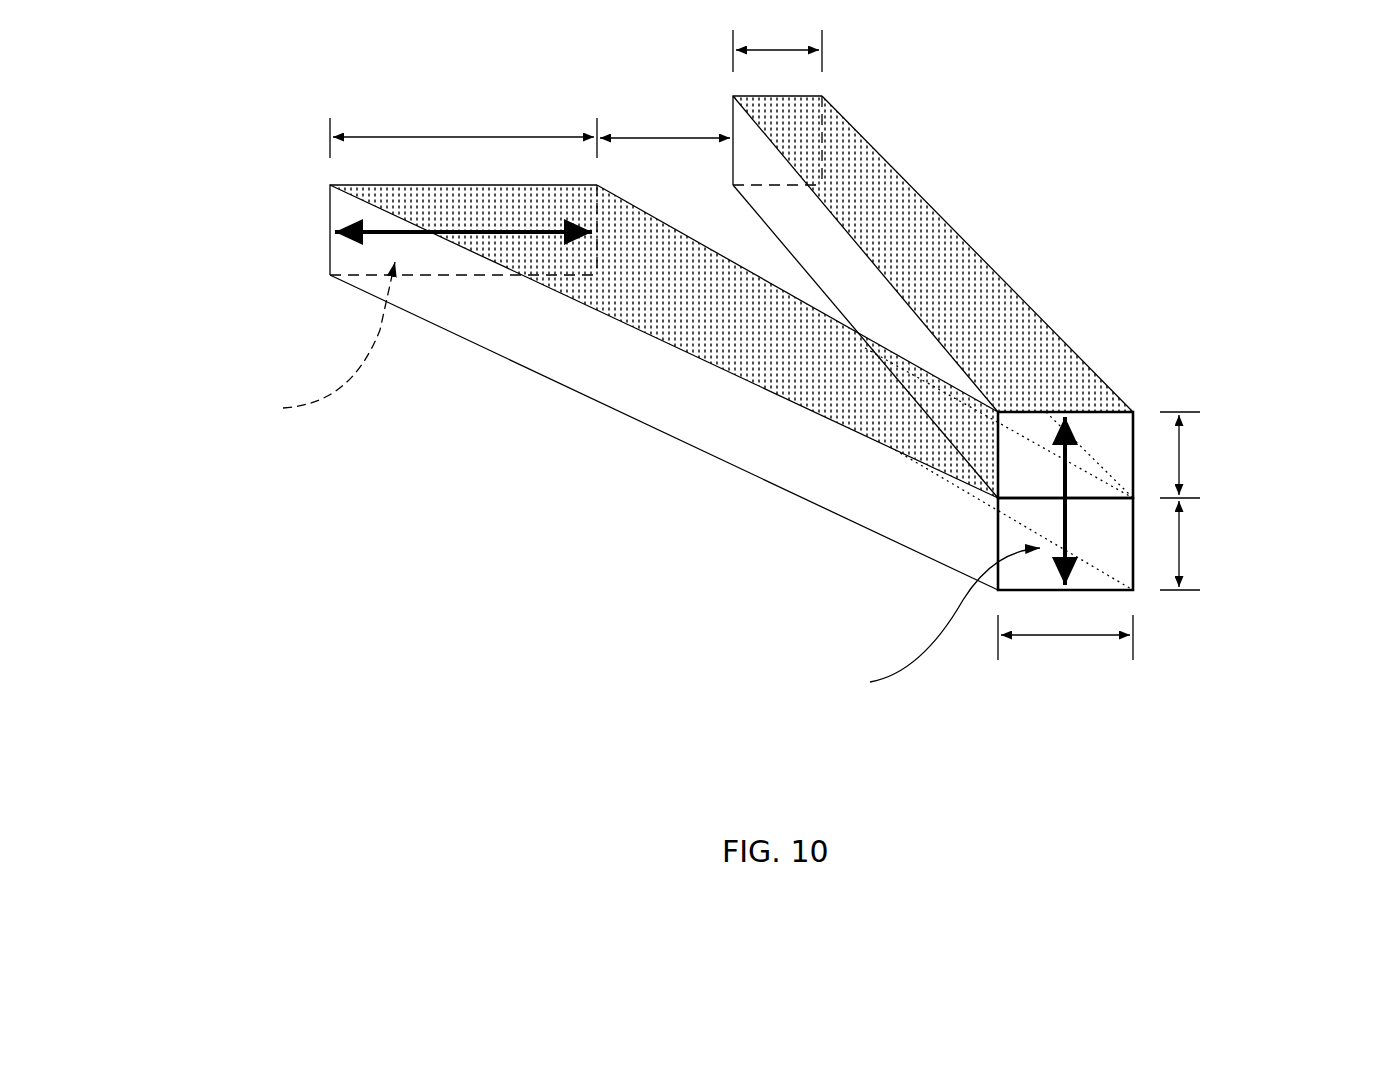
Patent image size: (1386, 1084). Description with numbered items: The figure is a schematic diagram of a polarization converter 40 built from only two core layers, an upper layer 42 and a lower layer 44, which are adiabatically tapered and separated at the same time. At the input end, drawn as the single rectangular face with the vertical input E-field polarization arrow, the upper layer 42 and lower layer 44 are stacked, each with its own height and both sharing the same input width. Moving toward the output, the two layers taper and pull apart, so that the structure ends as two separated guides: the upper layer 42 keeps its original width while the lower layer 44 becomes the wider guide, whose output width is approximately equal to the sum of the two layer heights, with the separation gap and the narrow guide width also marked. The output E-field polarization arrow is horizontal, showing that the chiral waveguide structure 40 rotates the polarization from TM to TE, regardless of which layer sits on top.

The polarization converter 40 is at (722, 361).
The upper layer 42 is at (1099, 443).
The lower layer 44 is at (1118, 551).